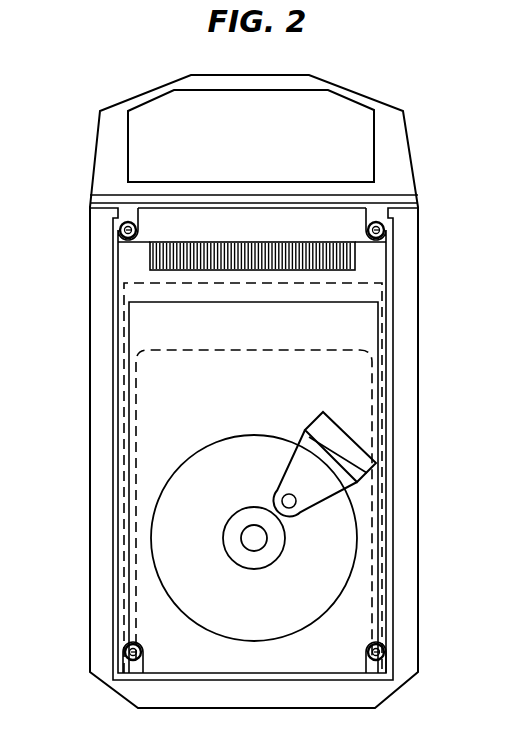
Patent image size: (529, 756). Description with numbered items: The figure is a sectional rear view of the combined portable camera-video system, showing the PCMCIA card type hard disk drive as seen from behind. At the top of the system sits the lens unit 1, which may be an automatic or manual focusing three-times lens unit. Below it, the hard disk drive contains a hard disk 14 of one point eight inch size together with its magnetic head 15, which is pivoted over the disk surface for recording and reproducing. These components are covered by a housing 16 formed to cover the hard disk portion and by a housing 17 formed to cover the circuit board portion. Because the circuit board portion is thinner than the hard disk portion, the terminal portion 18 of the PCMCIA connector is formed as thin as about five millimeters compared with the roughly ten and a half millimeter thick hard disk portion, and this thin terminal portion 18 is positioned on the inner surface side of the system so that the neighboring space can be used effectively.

The lens unit 1 is at (374, 140).
The hard disk 14 is at (338, 549).
The magnetic head 15 is at (345, 447).
The housing 16 is at (155, 348).
The housing 17 is at (125, 283).
The terminal portion 18 is at (380, 263).